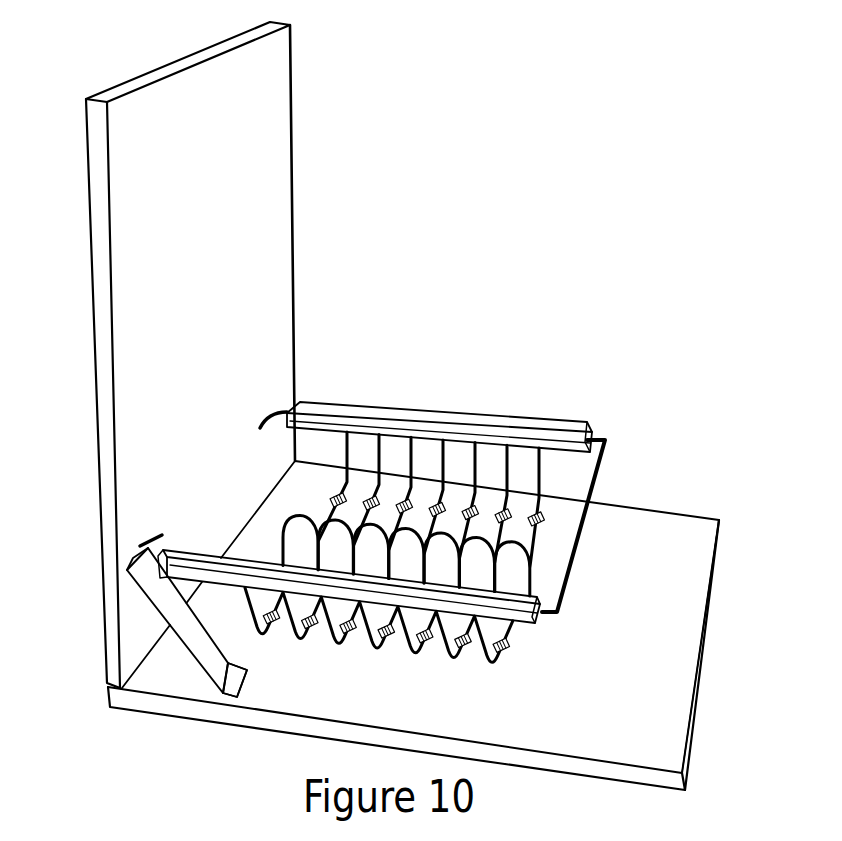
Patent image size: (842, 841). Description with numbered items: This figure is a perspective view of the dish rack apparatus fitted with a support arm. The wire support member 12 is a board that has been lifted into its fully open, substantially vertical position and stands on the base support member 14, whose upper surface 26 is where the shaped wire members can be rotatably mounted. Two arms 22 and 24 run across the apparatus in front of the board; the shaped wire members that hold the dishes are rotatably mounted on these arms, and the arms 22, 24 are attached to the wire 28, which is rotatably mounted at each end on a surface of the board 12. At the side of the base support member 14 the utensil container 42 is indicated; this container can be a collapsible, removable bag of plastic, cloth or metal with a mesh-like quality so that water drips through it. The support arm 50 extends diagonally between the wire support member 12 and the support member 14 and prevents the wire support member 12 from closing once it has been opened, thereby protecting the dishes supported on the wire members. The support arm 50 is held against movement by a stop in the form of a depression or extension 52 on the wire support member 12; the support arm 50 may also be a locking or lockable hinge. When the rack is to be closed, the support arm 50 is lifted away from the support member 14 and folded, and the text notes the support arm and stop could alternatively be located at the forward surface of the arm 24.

The wire support member 12 is at (252, 117).
The support member 14 is at (722, 543).
The arm 22 is at (520, 413).
The arm 24 is at (338, 592).
The surface 26 is at (523, 716).
The wire 28 is at (597, 481).
The utensil container 42 is at (692, 555).
The support arm 50 is at (163, 598).
The depression or extension 52 is at (227, 690).